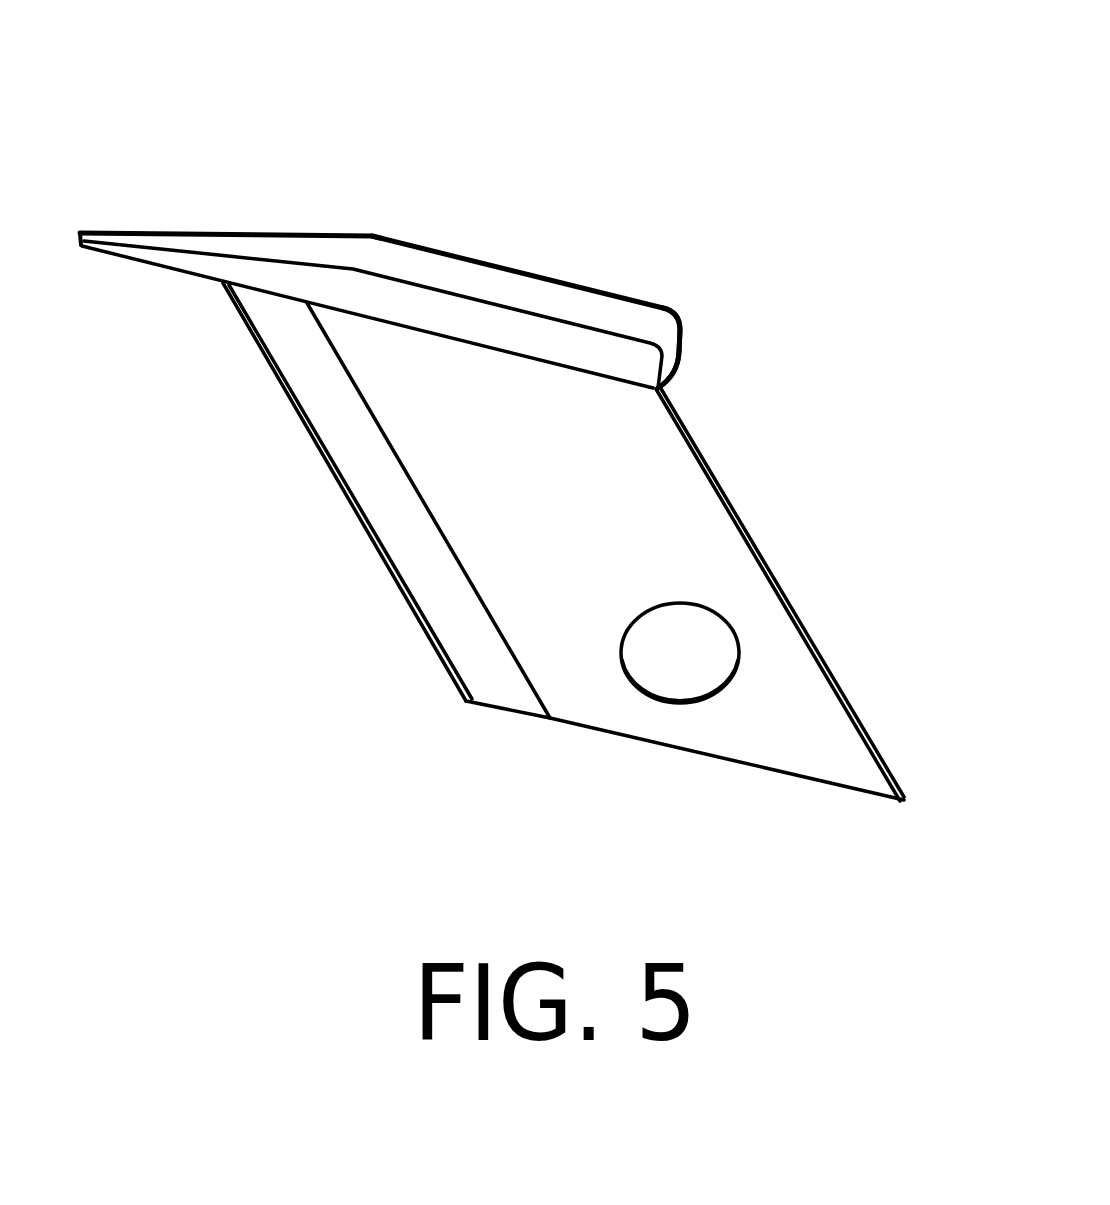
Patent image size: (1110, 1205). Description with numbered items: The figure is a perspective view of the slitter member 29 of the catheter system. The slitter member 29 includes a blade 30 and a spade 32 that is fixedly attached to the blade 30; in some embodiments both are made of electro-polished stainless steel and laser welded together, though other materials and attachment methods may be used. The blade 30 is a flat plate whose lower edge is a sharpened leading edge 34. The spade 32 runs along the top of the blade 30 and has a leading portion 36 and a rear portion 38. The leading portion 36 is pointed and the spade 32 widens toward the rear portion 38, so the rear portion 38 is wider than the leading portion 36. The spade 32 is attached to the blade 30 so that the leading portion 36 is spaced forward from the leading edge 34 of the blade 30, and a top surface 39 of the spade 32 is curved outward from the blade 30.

The slitter member 29 is at (483, 402).
The blade 30 is at (563, 542).
The spade 32 is at (409, 224).
The sharpened leading edge 34 is at (292, 402).
The leading portion 36 is at (80, 224).
The rear portion 38 is at (622, 318).
The top surface 39 is at (450, 287).